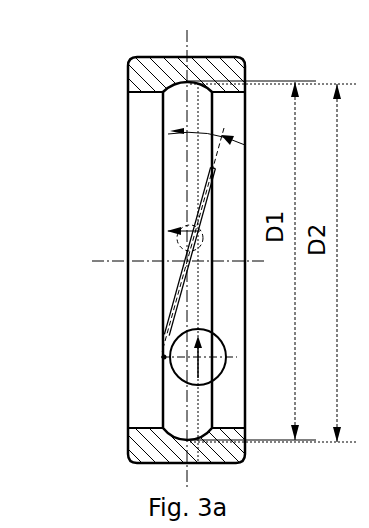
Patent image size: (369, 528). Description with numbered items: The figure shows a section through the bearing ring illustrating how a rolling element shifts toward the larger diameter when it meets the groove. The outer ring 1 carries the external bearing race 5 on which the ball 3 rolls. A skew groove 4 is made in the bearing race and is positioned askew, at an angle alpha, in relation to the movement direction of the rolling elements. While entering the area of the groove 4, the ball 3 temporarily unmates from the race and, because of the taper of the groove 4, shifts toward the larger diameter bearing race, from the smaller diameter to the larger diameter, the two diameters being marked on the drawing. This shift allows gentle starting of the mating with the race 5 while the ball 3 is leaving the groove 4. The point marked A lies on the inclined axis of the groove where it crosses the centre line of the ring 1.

The outer ring 1 is at (154, 245).
The ball 3 is at (135, 337).
The skew groove 4 is at (122, 251).
The external bearing race 5 is at (139, 261).
The axis point A is at (150, 236).